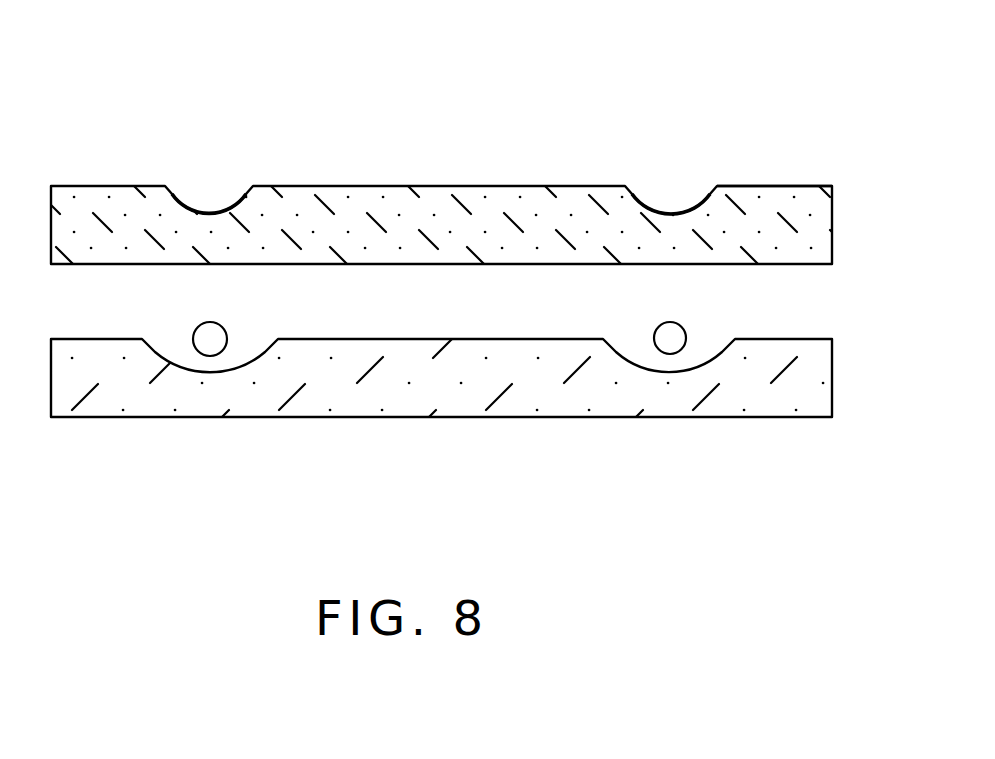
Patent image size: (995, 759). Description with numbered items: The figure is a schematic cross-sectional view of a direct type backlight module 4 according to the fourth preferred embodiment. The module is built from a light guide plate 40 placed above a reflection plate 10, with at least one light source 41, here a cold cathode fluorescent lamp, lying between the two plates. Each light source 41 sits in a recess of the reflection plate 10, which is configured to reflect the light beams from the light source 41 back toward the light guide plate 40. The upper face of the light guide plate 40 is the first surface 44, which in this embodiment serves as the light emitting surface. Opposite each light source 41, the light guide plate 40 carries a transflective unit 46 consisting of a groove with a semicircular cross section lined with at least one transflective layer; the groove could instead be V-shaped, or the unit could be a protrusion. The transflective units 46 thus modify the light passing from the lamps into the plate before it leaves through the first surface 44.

The direct type backlight module 4 is at (457, 33).
The reflection plate 10 is at (575, 370).
The light guide plate 40 is at (813, 233).
The light source 41 is at (212, 342).
The first surface 44 is at (799, 186).
The transflective unit 46 is at (207, 208).